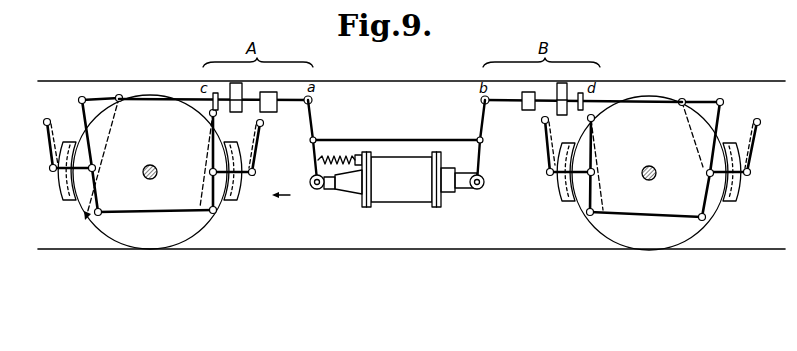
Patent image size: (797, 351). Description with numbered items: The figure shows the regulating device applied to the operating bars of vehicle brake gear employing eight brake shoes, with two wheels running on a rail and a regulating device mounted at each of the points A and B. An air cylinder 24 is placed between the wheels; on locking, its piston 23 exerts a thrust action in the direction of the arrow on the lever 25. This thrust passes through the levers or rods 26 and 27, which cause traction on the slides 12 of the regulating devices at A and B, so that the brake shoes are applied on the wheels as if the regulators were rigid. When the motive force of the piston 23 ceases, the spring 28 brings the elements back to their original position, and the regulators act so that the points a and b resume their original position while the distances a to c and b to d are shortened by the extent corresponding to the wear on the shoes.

The slide 12 is at (293, 103).
The piston 23 is at (316, 190).
The air cylinder 24 is at (397, 195).
The lever 25 is at (320, 117).
The lever or rod 26 is at (400, 139).
The lever or rod 27 is at (487, 163).
The spring 28 is at (318, 162).